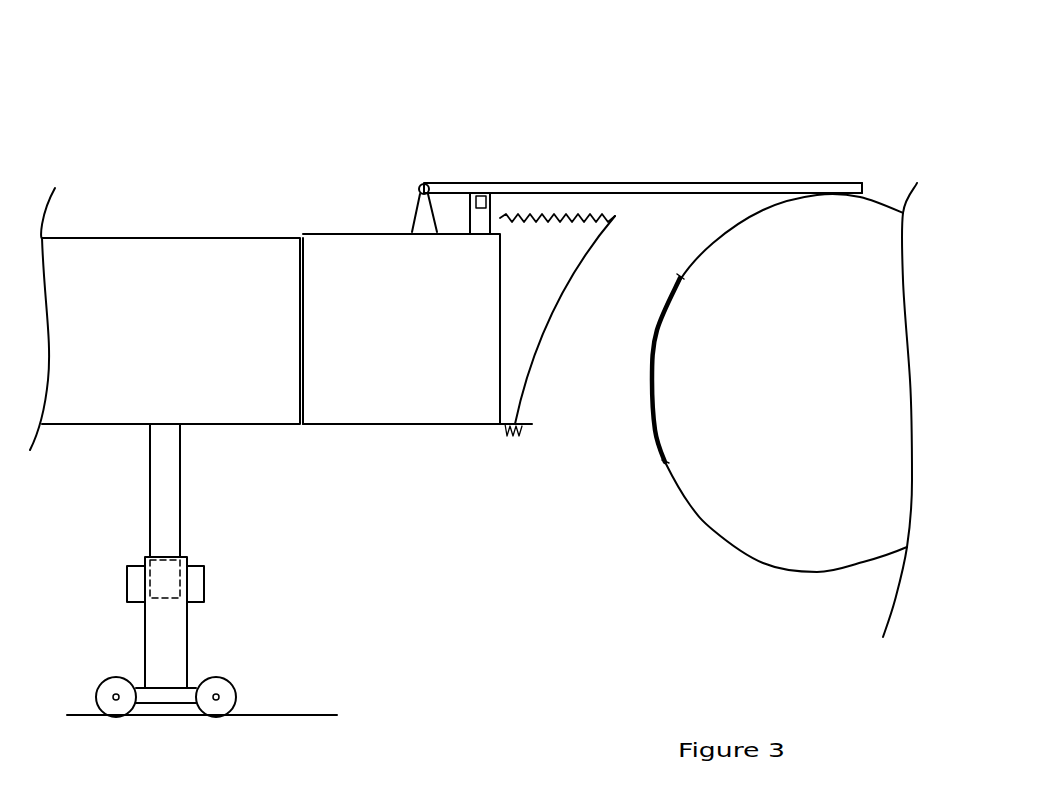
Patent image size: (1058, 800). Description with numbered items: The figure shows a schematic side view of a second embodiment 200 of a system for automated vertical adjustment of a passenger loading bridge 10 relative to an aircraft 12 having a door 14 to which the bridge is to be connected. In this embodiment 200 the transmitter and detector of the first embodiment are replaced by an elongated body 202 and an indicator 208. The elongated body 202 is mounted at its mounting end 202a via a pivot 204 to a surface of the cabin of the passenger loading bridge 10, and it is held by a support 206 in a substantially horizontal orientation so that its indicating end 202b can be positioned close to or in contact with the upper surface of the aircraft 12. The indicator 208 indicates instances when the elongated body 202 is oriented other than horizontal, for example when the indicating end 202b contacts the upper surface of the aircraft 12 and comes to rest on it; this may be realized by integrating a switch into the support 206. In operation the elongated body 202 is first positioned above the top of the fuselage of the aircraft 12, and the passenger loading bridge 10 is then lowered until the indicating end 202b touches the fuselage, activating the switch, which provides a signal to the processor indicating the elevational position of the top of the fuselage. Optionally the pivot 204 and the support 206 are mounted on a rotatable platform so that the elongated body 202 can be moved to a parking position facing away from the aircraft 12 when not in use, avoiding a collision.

The passenger loading bridge 10 is at (208, 258).
The aircraft 12 is at (748, 532).
The door 14 is at (651, 402).
The second embodiment of a system for automated vertical adjustment 200 is at (677, 24).
The elongated body 202 is at (675, 182).
The mounting end 202a is at (447, 183).
The indicating end 202b is at (820, 182).
The pivot 204 is at (418, 187).
The support 206 is at (500, 215).
The indicator 208 is at (483, 194).